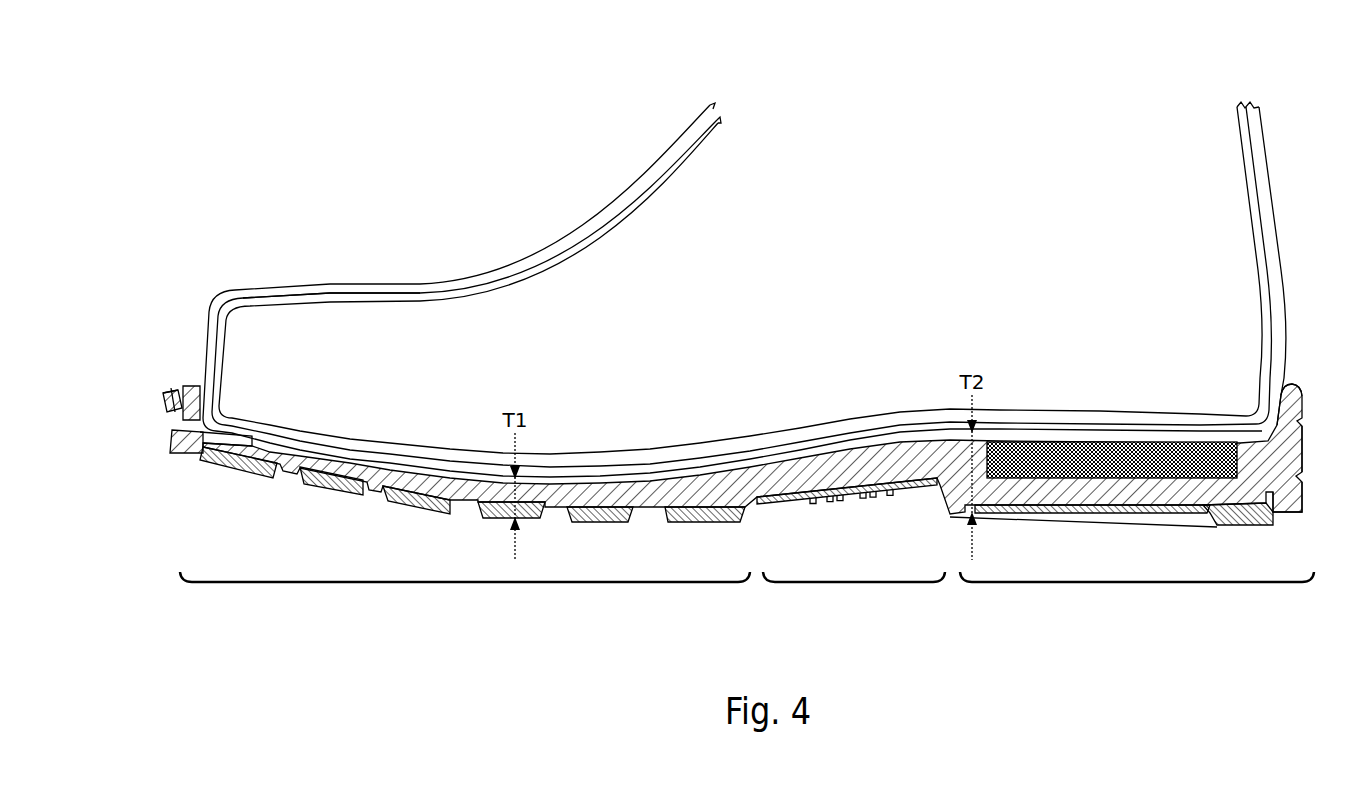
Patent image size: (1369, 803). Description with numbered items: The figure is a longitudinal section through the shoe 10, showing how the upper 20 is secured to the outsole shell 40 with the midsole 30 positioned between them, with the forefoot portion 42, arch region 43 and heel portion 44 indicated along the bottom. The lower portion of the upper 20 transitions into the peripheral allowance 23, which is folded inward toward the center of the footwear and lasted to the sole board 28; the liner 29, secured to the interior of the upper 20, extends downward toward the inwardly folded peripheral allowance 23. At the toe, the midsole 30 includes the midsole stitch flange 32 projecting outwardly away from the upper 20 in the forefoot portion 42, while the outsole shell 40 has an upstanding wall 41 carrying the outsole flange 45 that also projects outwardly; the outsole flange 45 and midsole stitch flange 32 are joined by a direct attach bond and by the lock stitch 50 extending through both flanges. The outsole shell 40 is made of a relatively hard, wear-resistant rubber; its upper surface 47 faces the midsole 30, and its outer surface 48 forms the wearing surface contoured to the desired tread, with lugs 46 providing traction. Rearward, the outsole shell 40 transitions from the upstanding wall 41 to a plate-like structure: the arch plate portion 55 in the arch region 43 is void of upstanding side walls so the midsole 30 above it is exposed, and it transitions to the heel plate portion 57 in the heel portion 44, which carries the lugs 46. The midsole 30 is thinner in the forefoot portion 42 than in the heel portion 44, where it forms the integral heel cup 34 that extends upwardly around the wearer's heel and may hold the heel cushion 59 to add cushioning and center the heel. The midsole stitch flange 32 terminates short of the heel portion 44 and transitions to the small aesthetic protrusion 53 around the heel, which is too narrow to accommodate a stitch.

The shoe 10 is at (434, 152).
The upper 20 is at (223, 300).
The peripheral allowance 23 is at (230, 430).
The sole board 28 is at (1125, 440).
The liner 29 is at (352, 300).
The midsole 30 is at (1280, 438).
The midsole stitch flange 32 is at (166, 396).
The heel cup 34 is at (1300, 477).
The outsole shell 40 is at (1296, 510).
The upstanding wall 41 is at (178, 438).
The forefoot portion 42 is at (475, 582).
The arch region 43 is at (853, 582).
The heel portion 44 is at (1142, 582).
The outsole flange 45 is at (165, 410).
The lugs 46 is at (725, 522).
The upper surface 47 is at (683, 485).
The outer surface 48 is at (633, 522).
The lock stitch 50 is at (170, 392).
The aesthetic protrusion 53 is at (1291, 390).
The arch plate portion 55 is at (845, 498).
The heel plate portion 57 is at (1050, 517).
The heel cushion 59 is at (1035, 460).